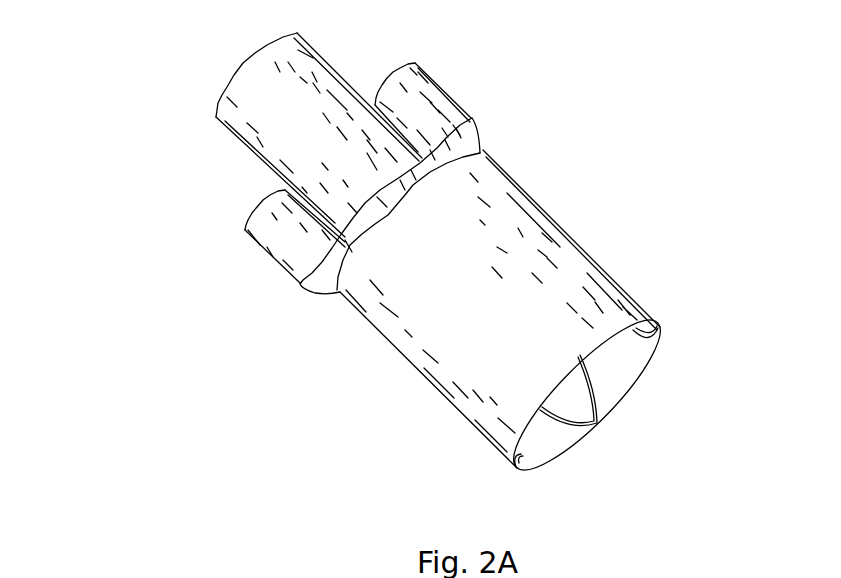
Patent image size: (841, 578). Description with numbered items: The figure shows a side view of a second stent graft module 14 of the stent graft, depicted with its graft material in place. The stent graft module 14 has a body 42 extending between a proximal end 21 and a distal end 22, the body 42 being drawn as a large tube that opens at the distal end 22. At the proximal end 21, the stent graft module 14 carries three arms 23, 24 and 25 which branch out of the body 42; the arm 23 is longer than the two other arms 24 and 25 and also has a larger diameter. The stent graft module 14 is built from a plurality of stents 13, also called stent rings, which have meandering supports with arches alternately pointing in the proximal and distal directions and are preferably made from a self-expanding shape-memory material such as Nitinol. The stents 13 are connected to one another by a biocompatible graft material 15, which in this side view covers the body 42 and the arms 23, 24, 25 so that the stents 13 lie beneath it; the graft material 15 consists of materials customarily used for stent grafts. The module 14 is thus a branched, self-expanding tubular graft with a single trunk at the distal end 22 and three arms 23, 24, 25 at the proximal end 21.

The stent 13 is at (600, 403).
The second stent graft module 14 is at (172, 222).
The graft material 15 is at (560, 233).
The proximal end 21 is at (215, 78).
The distal end 22 is at (597, 440).
The arm 23 is at (272, 255).
The arm 24 is at (238, 137).
The arm 25 is at (440, 90).
The body 42 is at (415, 325).